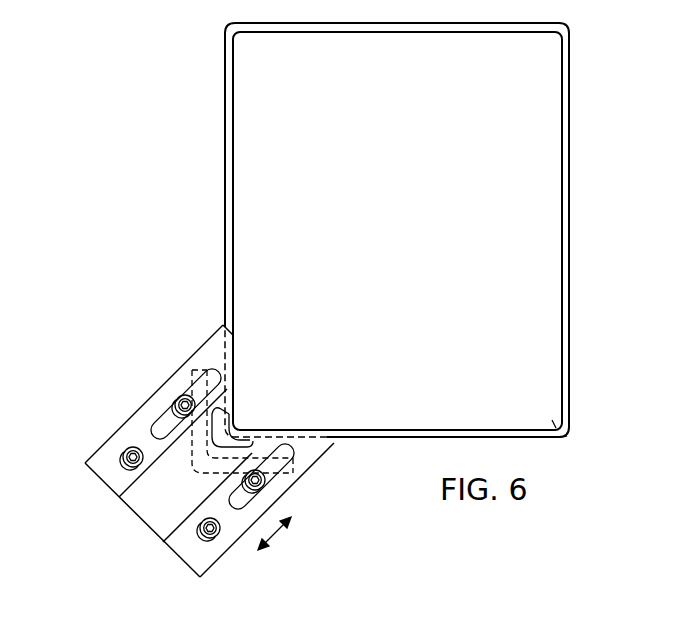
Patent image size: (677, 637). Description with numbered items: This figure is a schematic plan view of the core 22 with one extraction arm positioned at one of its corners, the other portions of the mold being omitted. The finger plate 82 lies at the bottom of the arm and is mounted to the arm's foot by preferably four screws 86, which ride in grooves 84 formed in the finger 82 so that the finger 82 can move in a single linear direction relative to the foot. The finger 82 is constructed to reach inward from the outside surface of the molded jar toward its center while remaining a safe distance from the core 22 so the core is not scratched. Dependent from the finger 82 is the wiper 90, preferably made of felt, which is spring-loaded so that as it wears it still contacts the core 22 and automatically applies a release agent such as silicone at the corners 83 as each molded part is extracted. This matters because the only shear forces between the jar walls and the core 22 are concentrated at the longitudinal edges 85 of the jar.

The core 22 is at (391, 244).
The finger plate 82 is at (194, 562).
The corners 83 is at (556, 428).
The grooves 84 is at (158, 428).
The longitudinal edges 85 is at (566, 436).
The screws 86 is at (124, 452).
The wiper 90 is at (228, 431).